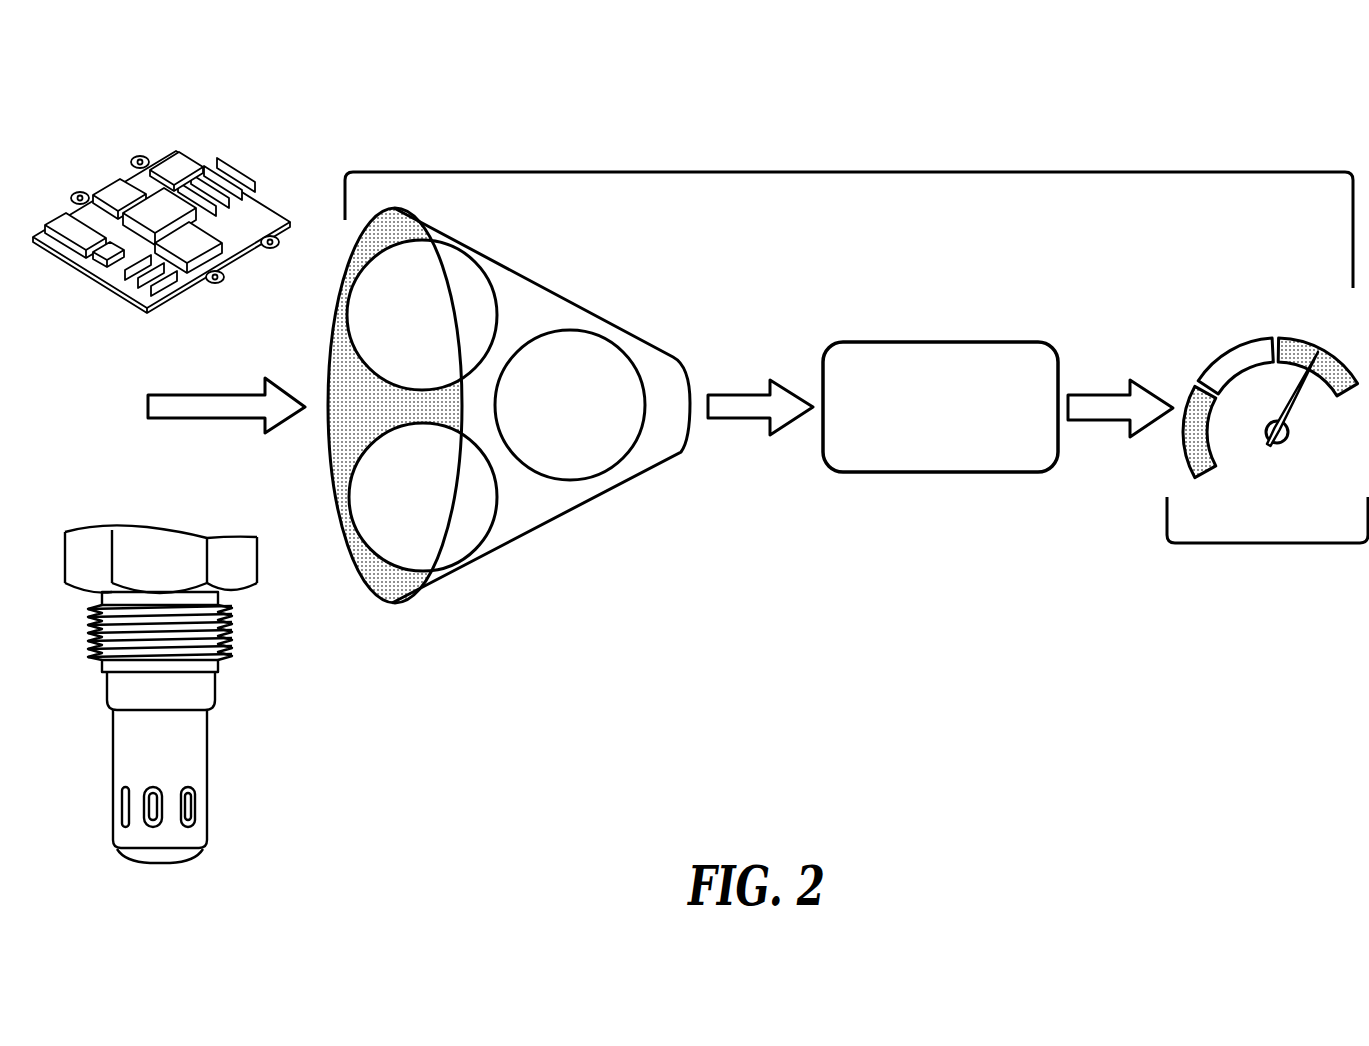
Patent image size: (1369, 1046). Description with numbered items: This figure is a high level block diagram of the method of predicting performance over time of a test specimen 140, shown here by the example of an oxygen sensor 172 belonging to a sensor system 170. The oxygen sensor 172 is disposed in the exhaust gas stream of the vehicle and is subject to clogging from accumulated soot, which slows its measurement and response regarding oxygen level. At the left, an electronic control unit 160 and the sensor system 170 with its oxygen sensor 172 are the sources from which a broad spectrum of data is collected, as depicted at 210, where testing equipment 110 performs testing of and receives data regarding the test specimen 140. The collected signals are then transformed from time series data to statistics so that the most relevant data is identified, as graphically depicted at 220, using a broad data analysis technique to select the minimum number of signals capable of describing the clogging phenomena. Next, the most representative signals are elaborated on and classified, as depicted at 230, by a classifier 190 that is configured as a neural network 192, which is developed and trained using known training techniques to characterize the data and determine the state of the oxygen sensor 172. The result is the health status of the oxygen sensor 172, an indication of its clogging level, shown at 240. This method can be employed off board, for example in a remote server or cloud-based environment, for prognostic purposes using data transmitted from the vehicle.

The testing equipment 110 is at (838, 172).
The electronic control unit 160 is at (232, 186).
The data collection 210 is at (148, 405).
The signal transformation and selection 220 is at (548, 527).
The classifier 190 is at (948, 311).
The neural network 192 is at (963, 416).
The classification step 230 is at (965, 473).
The health status indication 240 is at (1278, 543).
The sensor system 170 is at (312, 752).
The test specimen 140 is at (333, 672).
The oxygen sensor 172 is at (215, 683).